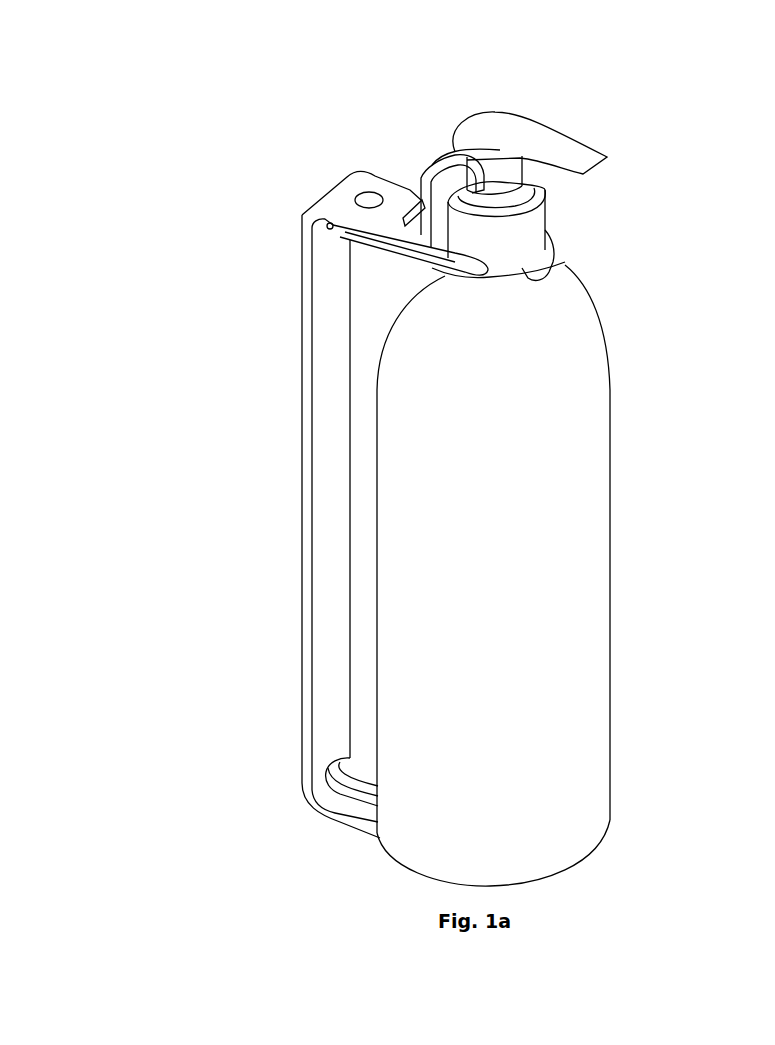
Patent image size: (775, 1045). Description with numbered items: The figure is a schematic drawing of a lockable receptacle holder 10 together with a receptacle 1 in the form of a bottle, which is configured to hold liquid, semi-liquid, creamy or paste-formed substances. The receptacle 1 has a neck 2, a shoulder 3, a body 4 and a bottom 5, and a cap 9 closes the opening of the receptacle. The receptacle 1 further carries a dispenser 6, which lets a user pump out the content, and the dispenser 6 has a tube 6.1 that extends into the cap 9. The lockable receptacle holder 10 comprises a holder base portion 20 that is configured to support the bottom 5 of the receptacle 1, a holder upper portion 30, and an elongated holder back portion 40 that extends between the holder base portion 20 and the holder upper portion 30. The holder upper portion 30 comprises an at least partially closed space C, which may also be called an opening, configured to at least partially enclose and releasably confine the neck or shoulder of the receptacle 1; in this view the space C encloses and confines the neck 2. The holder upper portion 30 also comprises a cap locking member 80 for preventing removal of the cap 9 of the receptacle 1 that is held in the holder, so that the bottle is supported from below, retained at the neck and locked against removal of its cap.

The receptacle 1 is at (559, 556).
The neck 2 is at (540, 227).
The shoulder 3 is at (583, 285).
The body 4 is at (568, 509).
The bottom 5 is at (546, 872).
The dispenser 6 is at (530, 122).
The tube 6.1 is at (482, 165).
The cap 9 is at (543, 207).
The lockable receptacle holder 10 is at (206, 138).
The holder base portion 20 is at (335, 826).
The holder upper portion 30 is at (390, 190).
The elongated holder back portion 40 is at (302, 440).
The cap locking member 80 is at (409, 198).
The space C is at (427, 256).